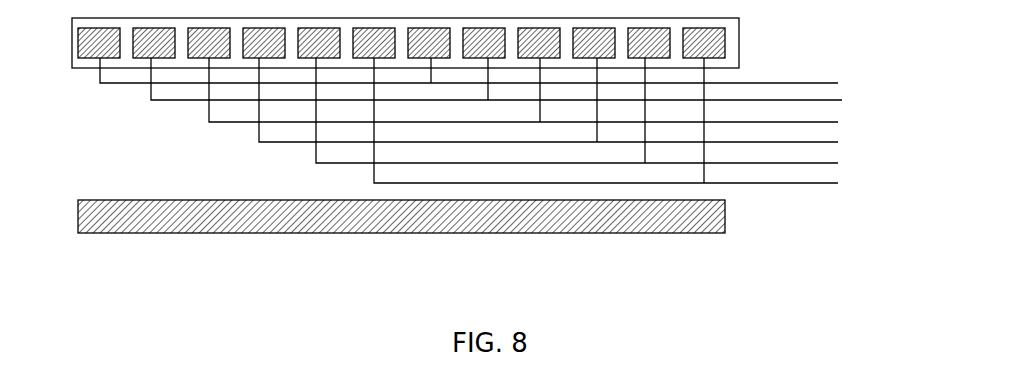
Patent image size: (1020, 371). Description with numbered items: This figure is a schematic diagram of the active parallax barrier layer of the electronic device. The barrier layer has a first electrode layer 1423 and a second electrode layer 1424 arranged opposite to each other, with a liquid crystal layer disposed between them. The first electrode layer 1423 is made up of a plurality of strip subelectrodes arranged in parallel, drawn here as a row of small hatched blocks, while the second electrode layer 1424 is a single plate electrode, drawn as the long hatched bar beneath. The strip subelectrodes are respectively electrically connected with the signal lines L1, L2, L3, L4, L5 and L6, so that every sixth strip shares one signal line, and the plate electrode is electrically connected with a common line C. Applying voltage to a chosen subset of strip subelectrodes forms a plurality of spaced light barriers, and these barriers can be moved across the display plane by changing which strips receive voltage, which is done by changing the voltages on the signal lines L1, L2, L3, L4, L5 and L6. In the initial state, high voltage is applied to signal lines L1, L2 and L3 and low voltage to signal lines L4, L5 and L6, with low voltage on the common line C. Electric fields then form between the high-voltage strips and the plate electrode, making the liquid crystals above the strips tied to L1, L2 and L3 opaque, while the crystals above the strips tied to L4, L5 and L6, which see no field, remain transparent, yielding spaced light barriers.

The first electrode layer 1423 is at (735, 44).
The signal line L1 is at (482, 74).
The signal line L2 is at (507, 83).
The signal line L3 is at (536, 94).
The signal line L4 is at (561, 104).
The signal line L5 is at (590, 114).
The signal line L6 is at (619, 124).
The common line C is at (725, 216).
The second electrode layer 1424 is at (468, 236).